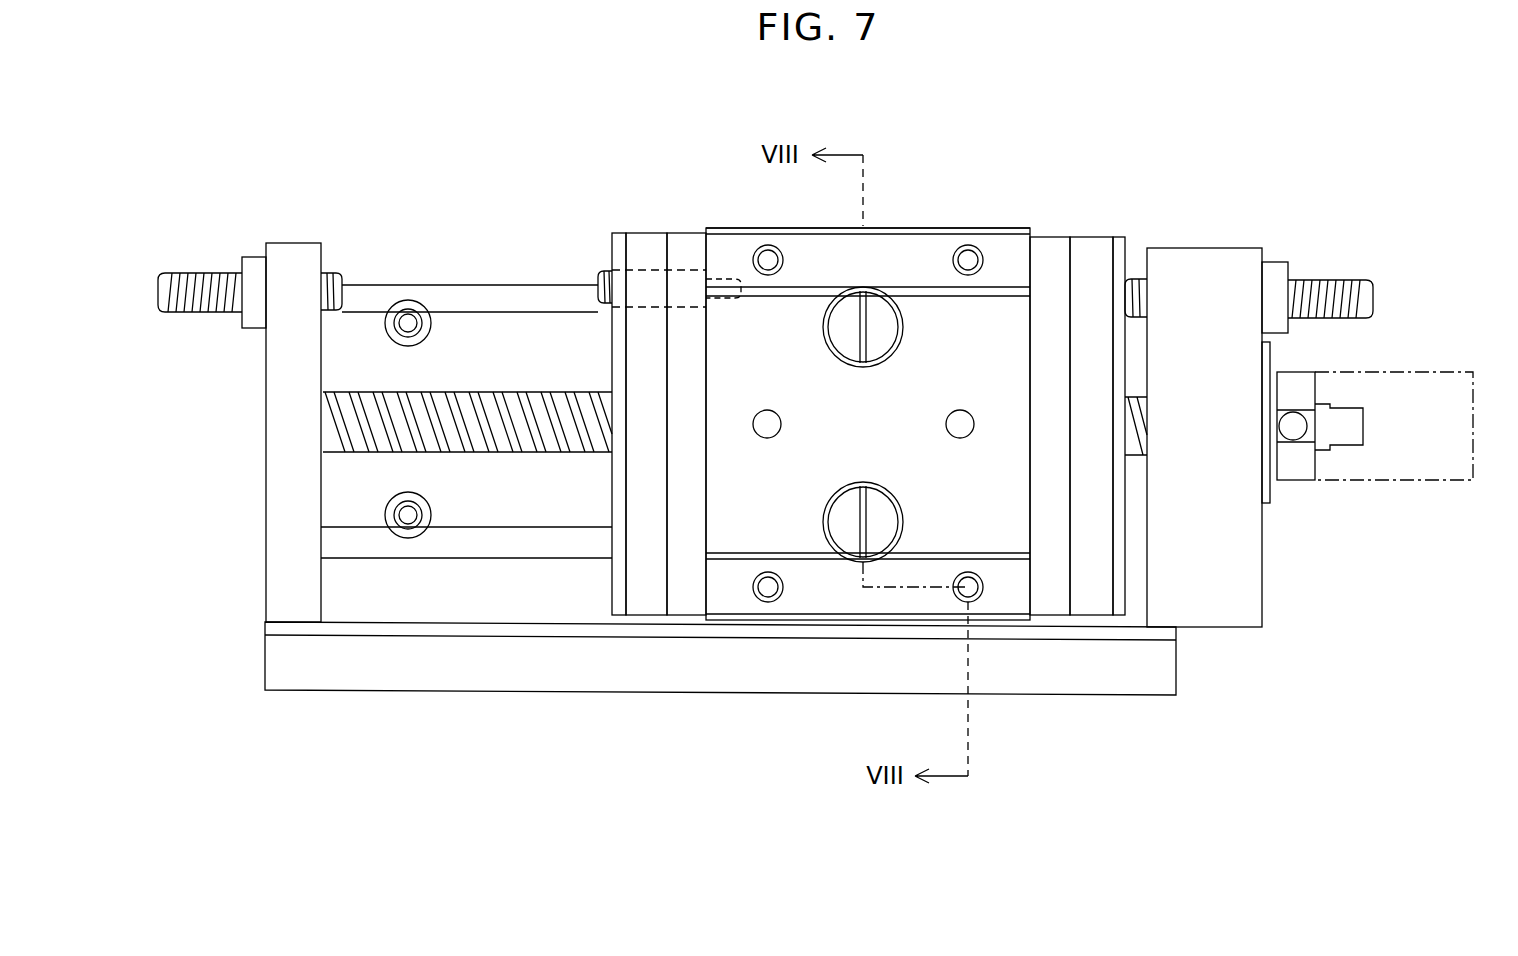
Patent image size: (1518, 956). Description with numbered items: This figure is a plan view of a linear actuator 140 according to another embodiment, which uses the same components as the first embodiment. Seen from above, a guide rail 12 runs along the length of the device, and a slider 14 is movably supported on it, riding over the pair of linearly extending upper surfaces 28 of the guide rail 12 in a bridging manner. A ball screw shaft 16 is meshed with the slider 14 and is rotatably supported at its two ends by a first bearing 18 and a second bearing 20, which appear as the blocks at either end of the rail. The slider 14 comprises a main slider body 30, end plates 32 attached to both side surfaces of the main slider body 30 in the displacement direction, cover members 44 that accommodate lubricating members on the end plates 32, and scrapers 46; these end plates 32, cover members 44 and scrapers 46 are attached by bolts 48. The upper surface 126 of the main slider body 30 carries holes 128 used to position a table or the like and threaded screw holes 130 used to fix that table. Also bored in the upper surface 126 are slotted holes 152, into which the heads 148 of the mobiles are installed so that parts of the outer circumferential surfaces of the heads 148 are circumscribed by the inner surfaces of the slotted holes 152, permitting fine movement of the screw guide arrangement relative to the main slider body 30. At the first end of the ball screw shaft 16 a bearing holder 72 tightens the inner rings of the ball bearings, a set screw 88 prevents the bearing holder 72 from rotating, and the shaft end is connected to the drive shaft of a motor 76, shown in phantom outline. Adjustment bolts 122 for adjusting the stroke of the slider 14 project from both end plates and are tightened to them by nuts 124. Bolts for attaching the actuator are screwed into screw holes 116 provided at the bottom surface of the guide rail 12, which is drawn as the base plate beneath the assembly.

The guide rail 12 is at (435, 285).
The slider 14 is at (932, 228).
The ball screw shaft 16 is at (545, 390).
The first bearing 18 is at (1188, 248).
The second bearing 20 is at (305, 242).
The upper surfaces 28 is at (367, 295).
The main slider body 30 is at (877, 224).
The end plates 32 is at (683, 240).
The cover members 44 is at (647, 242).
The scrapers 46 is at (618, 240).
The bolts 48 is at (598, 277).
The bearing holder 72 is at (1307, 467).
The motor 76 is at (1443, 470).
The set screw 88 is at (1293, 443).
The screw holes 116 is at (420, 323).
The adjustment bolts 122 is at (208, 277).
The nuts 124 is at (255, 262).
The upper surface 126 is at (733, 240).
The holes 128 is at (781, 424).
The threaded screw holes 130 is at (783, 260).
The linear actuator 140 is at (1038, 125).
The heads 148 is at (833, 327).
The slotted holes 152 is at (842, 348).